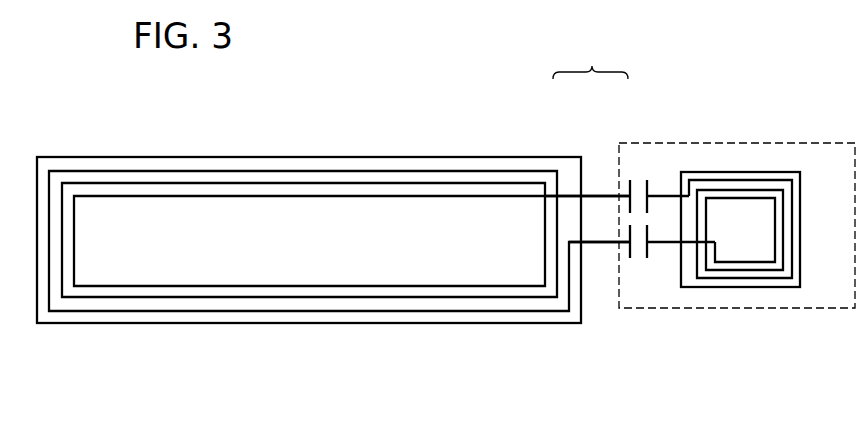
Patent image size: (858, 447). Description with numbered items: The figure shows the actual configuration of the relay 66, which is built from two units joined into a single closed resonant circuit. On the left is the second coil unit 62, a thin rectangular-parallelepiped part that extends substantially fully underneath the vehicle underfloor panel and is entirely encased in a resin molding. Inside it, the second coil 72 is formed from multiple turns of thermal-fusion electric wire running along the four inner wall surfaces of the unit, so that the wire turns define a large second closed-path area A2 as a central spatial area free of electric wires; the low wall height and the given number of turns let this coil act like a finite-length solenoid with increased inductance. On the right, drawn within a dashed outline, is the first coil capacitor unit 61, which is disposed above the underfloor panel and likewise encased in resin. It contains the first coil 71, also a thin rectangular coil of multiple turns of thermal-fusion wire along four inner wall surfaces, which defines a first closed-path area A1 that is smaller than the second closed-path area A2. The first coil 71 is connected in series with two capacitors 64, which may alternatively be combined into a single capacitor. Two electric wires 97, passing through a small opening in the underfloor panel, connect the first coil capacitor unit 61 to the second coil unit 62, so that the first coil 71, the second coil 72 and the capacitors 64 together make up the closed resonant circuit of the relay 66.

The relay 66 is at (590, 59).
The second coil unit 62 is at (540, 157).
The first coil capacitor unit 61 is at (628, 141).
The second coil 72 is at (137, 197).
The first coil 71 is at (743, 199).
The electric wires 97 is at (597, 194).
The capacitors 64 is at (637, 194).
The second closed-path area A2 is at (253, 255).
The first closed-path area A1 is at (757, 223).